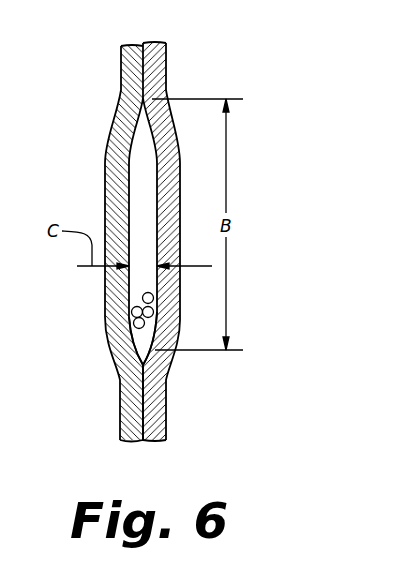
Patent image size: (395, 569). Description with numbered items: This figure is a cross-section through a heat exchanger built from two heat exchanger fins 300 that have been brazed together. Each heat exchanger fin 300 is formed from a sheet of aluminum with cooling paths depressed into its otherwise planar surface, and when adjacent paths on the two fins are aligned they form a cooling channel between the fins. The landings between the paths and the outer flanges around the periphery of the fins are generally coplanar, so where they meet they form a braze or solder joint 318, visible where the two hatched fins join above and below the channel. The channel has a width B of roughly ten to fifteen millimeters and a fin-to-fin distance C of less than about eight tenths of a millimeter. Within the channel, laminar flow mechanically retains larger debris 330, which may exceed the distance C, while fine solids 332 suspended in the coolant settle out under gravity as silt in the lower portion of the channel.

The heat exchanger fin 300 is at (120, 67).
The braze or solder joint 318 is at (148, 403).
The larger debris 330 is at (146, 333).
The fine solids 332 is at (133, 322).